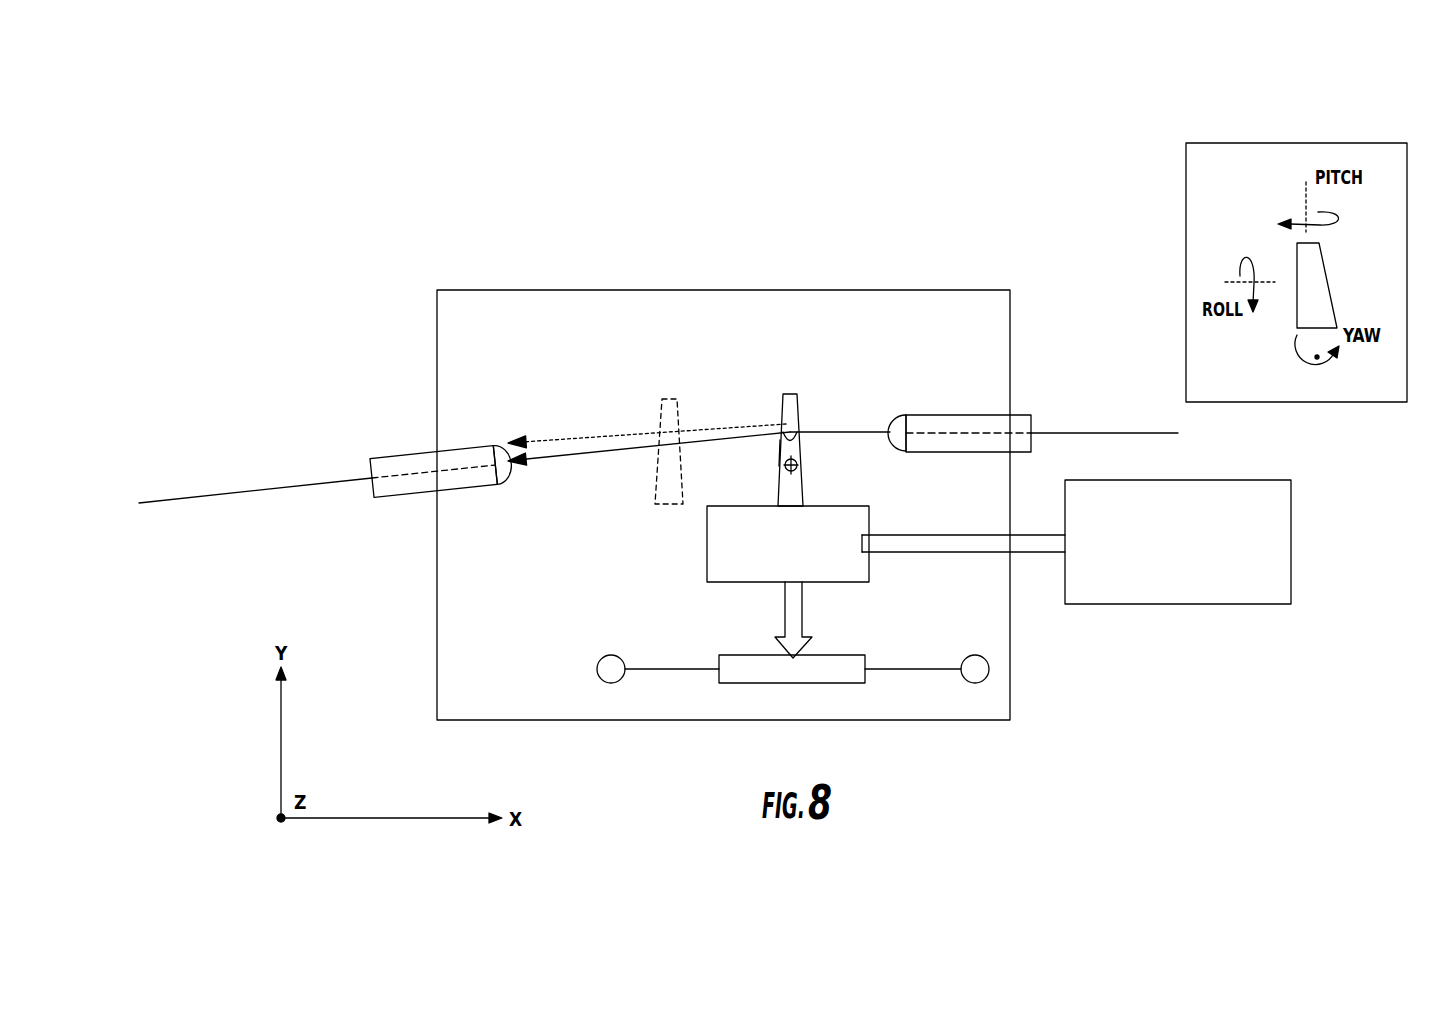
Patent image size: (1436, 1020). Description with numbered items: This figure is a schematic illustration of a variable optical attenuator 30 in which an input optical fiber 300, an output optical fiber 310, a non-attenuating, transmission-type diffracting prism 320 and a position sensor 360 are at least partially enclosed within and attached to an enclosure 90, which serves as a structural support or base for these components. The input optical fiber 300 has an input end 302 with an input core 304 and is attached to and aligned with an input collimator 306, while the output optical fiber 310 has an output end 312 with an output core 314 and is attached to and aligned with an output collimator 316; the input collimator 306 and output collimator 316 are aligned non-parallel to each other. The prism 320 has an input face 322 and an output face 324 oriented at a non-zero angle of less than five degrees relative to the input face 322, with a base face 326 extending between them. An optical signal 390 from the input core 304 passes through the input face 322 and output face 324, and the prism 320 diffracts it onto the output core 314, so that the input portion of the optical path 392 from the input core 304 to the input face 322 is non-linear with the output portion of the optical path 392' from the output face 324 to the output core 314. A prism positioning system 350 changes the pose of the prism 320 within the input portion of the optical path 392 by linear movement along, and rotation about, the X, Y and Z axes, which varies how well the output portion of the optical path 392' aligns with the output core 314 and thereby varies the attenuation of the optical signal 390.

The variable optical attenuator 30 is at (976, 237).
The enclosure 90 is at (541, 289).
The input optical fiber 300 is at (1073, 432).
The input end 302 is at (930, 436).
The input core 304 is at (933, 437).
The input collimator 306 is at (963, 417).
The output optical fiber 310 is at (247, 497).
The output end 312 is at (462, 453).
The output core 314 is at (470, 483).
The output collimator 316 is at (418, 495).
The non-attenuating, transmission-type diffracting prism 320 is at (797, 414).
The input face 322 is at (800, 468).
The output face 324 is at (779, 466).
The base face 326 is at (794, 507).
The prism positioning system 350 is at (1292, 505).
The position sensor 360 is at (855, 655).
The optical signal 390 is at (825, 434).
The input portion of the optical path 392 is at (693, 415).
The output portion of the optical path 392' is at (647, 465).